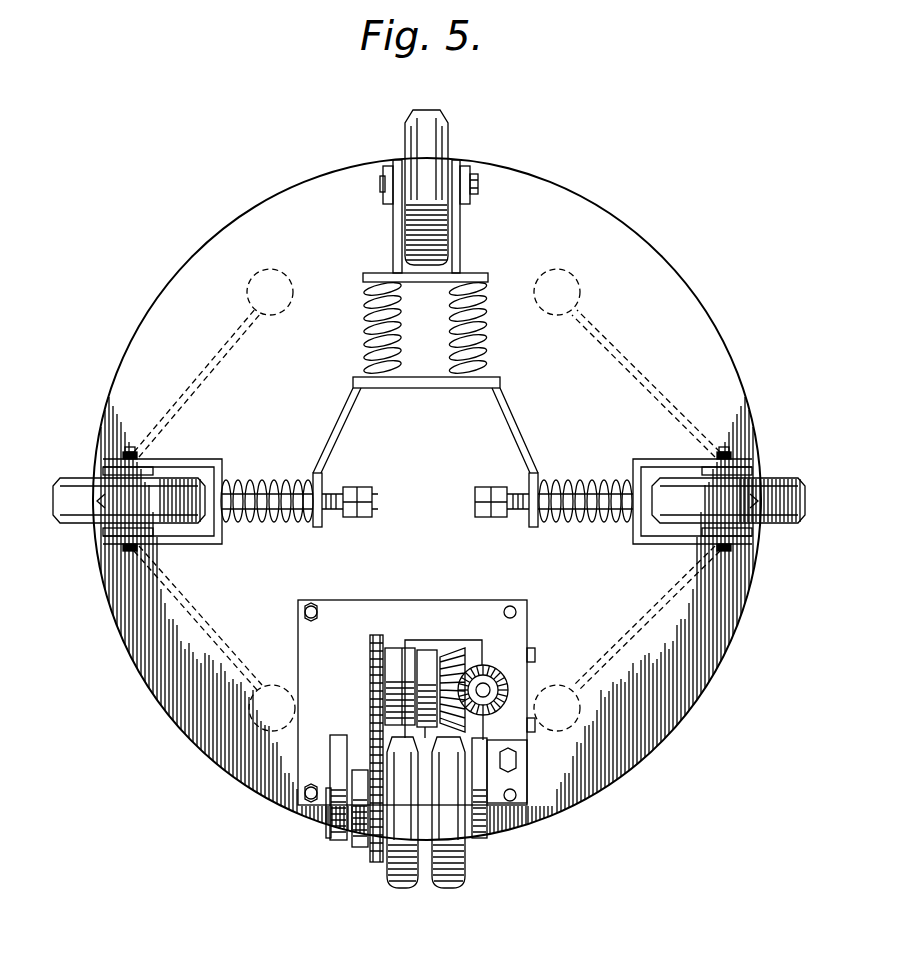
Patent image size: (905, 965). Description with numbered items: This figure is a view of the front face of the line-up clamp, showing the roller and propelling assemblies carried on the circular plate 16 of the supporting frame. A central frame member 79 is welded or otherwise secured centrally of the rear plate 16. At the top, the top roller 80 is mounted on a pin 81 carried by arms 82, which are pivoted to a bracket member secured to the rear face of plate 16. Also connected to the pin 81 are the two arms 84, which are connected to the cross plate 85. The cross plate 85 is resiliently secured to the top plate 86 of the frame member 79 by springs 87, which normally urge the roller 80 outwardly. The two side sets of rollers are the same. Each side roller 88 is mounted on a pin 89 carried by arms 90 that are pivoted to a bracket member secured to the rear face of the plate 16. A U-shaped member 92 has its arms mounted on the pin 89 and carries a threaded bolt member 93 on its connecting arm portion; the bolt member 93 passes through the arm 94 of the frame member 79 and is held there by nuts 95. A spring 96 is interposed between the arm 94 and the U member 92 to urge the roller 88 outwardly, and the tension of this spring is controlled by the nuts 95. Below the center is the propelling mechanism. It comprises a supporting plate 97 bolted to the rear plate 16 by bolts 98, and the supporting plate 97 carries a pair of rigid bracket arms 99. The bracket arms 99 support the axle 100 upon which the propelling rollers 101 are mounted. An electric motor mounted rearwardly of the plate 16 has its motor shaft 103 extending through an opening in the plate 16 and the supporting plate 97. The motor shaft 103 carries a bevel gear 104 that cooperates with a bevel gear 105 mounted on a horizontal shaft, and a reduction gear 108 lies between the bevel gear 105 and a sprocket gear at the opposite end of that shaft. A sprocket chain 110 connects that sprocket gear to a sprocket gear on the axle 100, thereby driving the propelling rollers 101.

The circular plate 16 is at (672, 280).
The central frame member 79 is at (517, 446).
The top roller 80 is at (432, 122).
The pin 81 is at (478, 184).
The arms 82 is at (392, 164).
The arms 84 is at (395, 230).
The cross plate 85 is at (488, 278).
The top plate 86 is at (500, 382).
The springs 87 is at (364, 318).
The roller 88 is at (66, 505).
The pin 89 is at (128, 450).
The arms 90 is at (120, 470).
The U-shaped member 92 is at (200, 538).
The bolt member 93 is at (250, 482).
The arm 94 is at (326, 492).
The nuts 95 is at (358, 490).
The spring 96 is at (272, 484).
The supporting plate 97 is at (344, 680).
The bolts 98 is at (511, 604).
The bracket arms 99 is at (340, 834).
The axle 100 is at (494, 820).
The propelling rollers 101 is at (448, 888).
The motor shaft 103 is at (490, 684).
The bevel gear 104 is at (498, 686).
The bevel gear 105 is at (457, 652).
The reduction gear 108 is at (424, 650).
The sprocket chain 110 is at (370, 704).